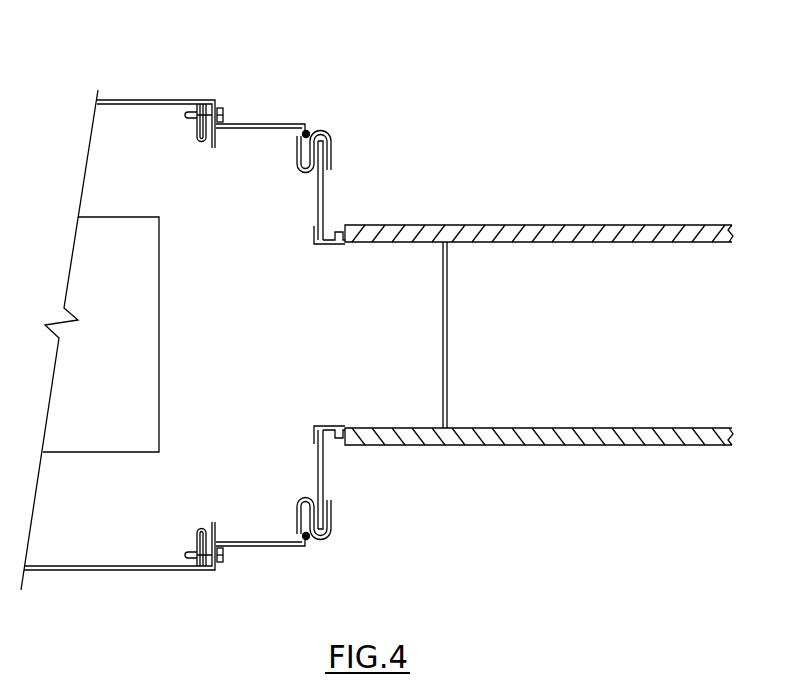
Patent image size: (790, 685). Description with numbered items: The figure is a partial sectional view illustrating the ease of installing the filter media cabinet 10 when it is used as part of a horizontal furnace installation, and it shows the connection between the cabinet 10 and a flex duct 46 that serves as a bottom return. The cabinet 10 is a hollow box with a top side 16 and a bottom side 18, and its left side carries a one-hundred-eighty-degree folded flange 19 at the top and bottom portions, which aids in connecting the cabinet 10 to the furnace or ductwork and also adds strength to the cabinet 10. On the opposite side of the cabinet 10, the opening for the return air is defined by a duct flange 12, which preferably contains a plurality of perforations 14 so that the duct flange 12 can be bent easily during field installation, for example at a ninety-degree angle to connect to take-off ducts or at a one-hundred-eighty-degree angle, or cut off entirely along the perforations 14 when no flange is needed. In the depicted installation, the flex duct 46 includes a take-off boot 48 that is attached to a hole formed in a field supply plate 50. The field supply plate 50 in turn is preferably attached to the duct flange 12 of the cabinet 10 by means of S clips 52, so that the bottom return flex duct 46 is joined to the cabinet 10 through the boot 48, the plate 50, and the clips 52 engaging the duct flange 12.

The filter media cabinet 10 is at (248, 98).
The duct flange 12 is at (299, 157).
The perforations 14 is at (307, 132).
The top side 16 is at (282, 126).
The bottom side 18 is at (262, 546).
The folded flange 19 is at (212, 103).
The flex duct 46 is at (583, 224).
The take-off boot 48 is at (388, 243).
The field supply plate 50 is at (324, 200).
The S clips 52 is at (331, 158).